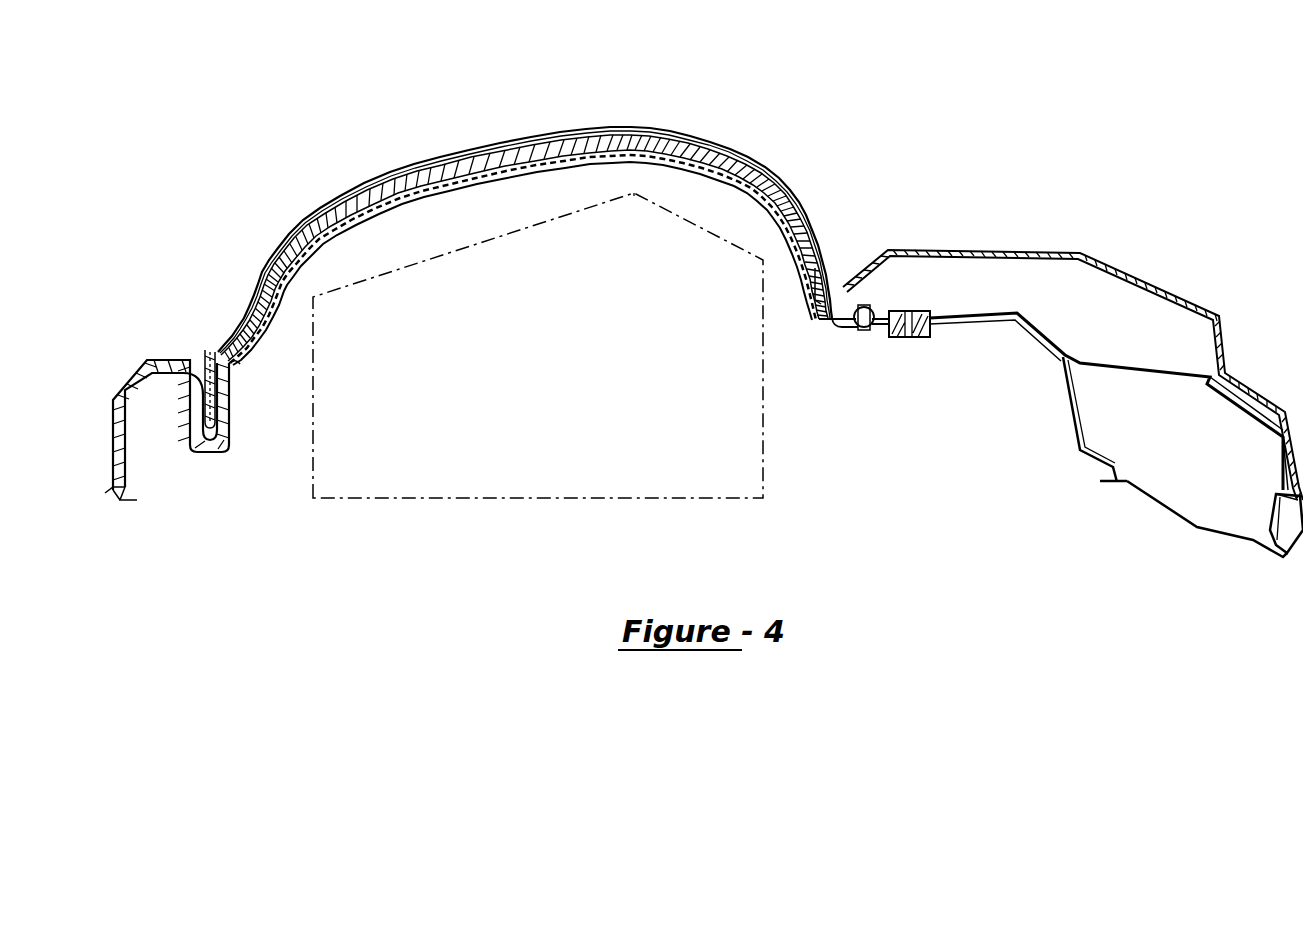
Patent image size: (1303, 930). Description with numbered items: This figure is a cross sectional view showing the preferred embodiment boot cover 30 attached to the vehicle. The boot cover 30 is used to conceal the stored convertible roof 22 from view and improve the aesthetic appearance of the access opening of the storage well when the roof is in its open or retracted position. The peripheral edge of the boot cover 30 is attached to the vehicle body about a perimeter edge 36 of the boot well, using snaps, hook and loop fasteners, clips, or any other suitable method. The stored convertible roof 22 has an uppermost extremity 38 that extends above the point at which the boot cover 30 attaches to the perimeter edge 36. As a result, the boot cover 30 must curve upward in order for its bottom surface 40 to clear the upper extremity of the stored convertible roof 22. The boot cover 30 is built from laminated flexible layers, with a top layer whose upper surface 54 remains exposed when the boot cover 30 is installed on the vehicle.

The stored convertible roof 22 is at (524, 366).
The boot cover 30 is at (477, 145).
The perimeter edge 36 is at (237, 363).
The uppermost extremity 38 is at (634, 195).
The bottom surface 40 is at (481, 190).
The upper surface 54 is at (711, 145).